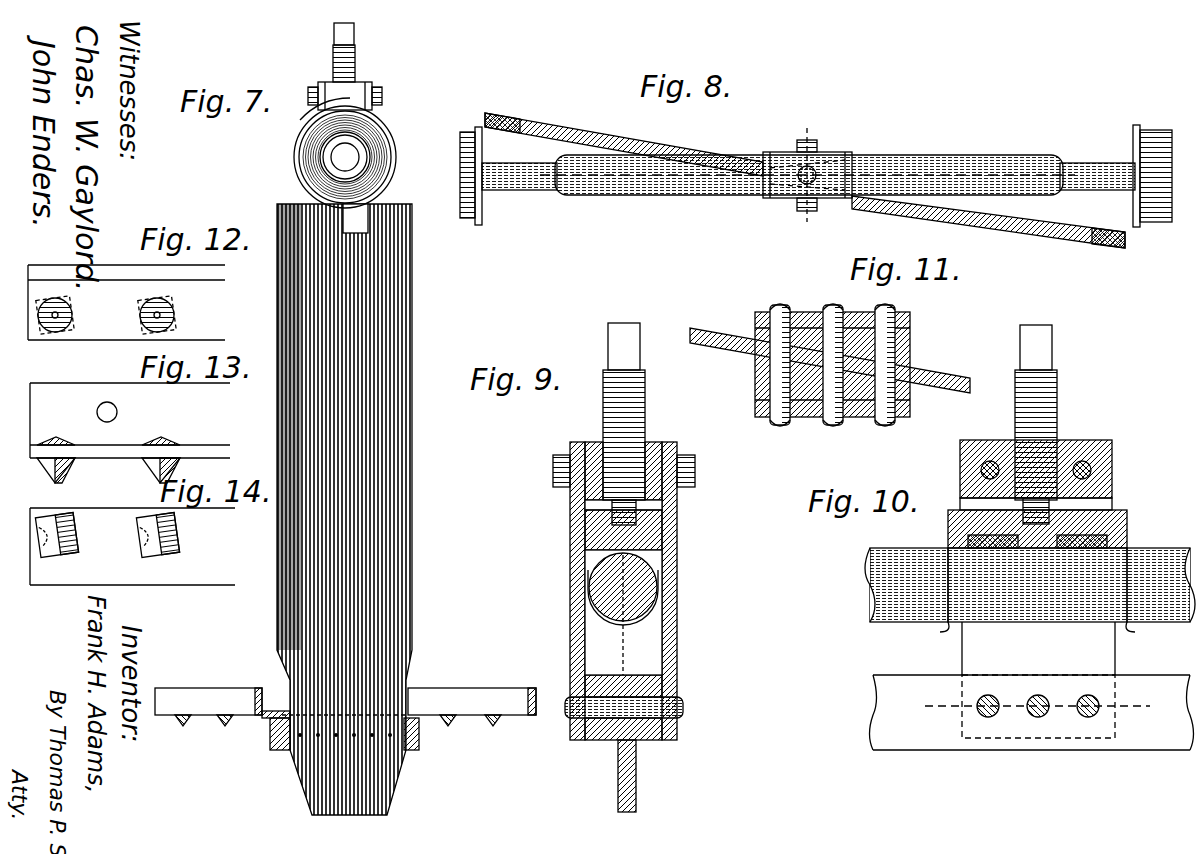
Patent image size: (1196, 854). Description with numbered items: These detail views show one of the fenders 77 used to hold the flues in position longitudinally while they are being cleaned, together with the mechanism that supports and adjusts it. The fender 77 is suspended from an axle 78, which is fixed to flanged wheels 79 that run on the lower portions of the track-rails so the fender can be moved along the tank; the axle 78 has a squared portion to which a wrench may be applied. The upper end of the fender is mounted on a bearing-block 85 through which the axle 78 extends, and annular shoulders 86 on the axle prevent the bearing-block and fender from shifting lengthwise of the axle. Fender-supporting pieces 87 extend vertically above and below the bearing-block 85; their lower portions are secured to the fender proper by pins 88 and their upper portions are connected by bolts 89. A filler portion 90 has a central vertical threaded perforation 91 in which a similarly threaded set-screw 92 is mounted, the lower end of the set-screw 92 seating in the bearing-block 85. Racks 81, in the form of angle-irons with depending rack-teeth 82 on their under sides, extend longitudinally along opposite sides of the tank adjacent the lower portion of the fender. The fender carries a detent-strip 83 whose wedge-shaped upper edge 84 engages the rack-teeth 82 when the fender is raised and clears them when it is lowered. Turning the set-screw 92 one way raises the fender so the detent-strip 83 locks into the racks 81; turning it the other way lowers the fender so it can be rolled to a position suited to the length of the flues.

In FIG. 7, the fender 77 is at (390, 490).
In FIG. 8, the fender 77 is at (575, 126).
In FIG. 11, the fender 77 is at (708, 334).
In FIG. 9, the fender 77 is at (636, 778).
In FIG. 10, the fender 77 is at (1032, 725).
In FIG. 7, the axle 78 is at (330, 158).
In FIG. 8, the axle 78 is at (632, 192).
In FIG. 9, the axle 78 is at (640, 588).
In FIG. 10, the axle 78 is at (1162, 545).
In FIG. 7, the flanged wheels 79 is at (378, 137).
In FIG. 8, the flanged wheels 79 is at (482, 205).
In FIG. 7, the racks 81 is at (214, 694).
In FIG. 12, the racks 81 is at (105, 280).
In FIG. 13, the racks 81 is at (130, 420).
In FIG. 14, the racks 81 is at (132, 546).
In FIG. 7, the rack-teeth 82 is at (265, 722).
In FIG. 12, the rack-teeth 82 is at (140, 330).
In FIG. 13, the rack-teeth 82 is at (138, 470).
In FIG. 14, the rack-teeth 82 is at (138, 535).
In FIG. 7, the detent-strip 83 is at (275, 750).
In FIG. 8, the detent-strip 83 is at (640, 152).
In FIG. 7, the wedge-shaped upper edge 84 is at (278, 722).
In FIG. 8, the wedge-shaped upper edge 84 is at (500, 122).
In FIG. 9, the bearing-block 85 is at (585, 535).
In FIG. 10, the bearing-block 85 is at (948, 538).
In FIG. 9, the annular shoulders 86 is at (590, 608).
In FIG. 10, the annular shoulders 86 is at (940, 632).
In FIG. 7, the fender-supporting pieces 87 is at (322, 102).
In FIG. 8, the fender-supporting pieces 87 is at (767, 152).
In FIG. 11, the fender-supporting pieces 87 is at (905, 316).
In FIG. 9, the fender-supporting pieces 87 is at (570, 640).
In FIG. 10, the fender-supporting pieces 87 is at (1038, 680).
In FIG. 7, the pins 88 is at (370, 215).
In FIG. 11, the pins 88 is at (885, 304).
In FIG. 9, the pins 88 is at (683, 705).
In FIG. 10, the pins 88 is at (1084, 717).
In FIG. 7, the bolts 89 is at (386, 93).
In FIG. 8, the bolts 89 is at (812, 145).
In FIG. 9, the bolts 89 is at (553, 470).
In FIG. 10, the bolts 89 is at (985, 470).
In FIG. 7, the filler portion 90 is at (348, 95).
In FIG. 8, the filler portion 90 is at (840, 170).
In FIG. 9, the filler portion 90 is at (660, 445).
In FIG. 10, the filler portion 90 is at (1082, 447).
In FIG. 8, the threaded perforation 91 is at (800, 178).
In FIG. 9, the threaded perforation 91 is at (645, 445).
In FIG. 10, the threaded perforation 91 is at (1055, 440).
In FIG. 7, the set-screw 92 is at (355, 58).
In FIG. 8, the set-screw 92 is at (815, 182).
In FIG. 9, the set-screw 92 is at (603, 410).
In FIG. 10, the set-screw 92 is at (1057, 390).